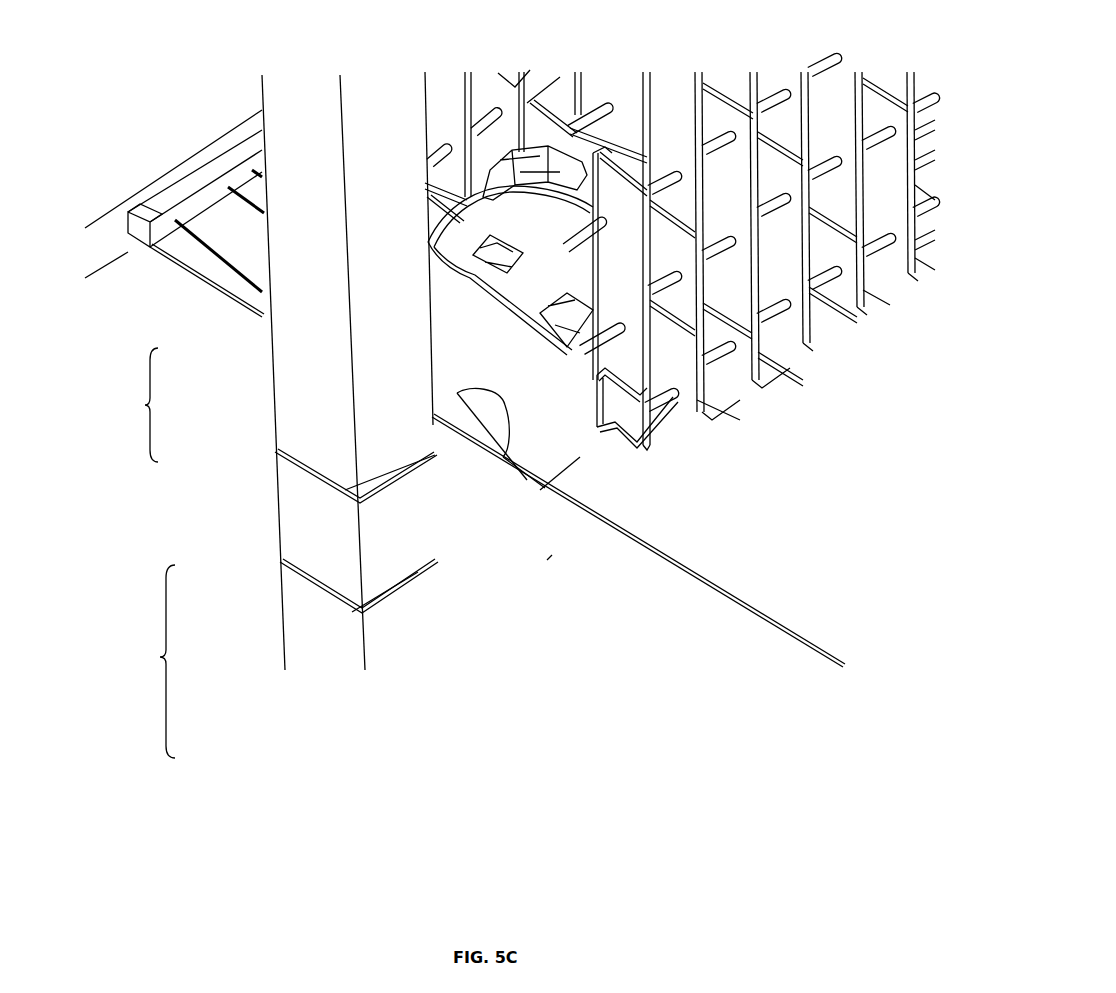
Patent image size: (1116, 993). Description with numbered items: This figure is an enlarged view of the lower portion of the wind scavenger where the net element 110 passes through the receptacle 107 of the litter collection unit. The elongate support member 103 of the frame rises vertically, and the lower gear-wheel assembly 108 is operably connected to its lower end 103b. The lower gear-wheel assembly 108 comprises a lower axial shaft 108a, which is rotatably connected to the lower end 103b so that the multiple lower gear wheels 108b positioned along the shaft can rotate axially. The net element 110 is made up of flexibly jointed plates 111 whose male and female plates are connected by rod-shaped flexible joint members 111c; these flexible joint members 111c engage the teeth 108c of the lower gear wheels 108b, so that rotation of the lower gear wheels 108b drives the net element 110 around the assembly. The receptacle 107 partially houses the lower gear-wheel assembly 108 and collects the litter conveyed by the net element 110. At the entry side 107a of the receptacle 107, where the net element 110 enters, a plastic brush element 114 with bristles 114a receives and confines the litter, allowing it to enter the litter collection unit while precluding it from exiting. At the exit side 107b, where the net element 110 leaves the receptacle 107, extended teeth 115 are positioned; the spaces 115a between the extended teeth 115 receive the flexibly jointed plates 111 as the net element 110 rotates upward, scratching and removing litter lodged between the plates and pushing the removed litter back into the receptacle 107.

The elongate support member 103 is at (293, 132).
The lower end of the elongate support member 103b is at (268, 515).
The receptacle 107 is at (223, 268).
The entry side of the receptacle 107a is at (128, 247).
The exit side of the receptacle 107b is at (628, 467).
The lower gear-wheel assembly 108 is at (130, 405).
The lower axial shaft 108a is at (457, 408).
The lower gear wheels 108b is at (517, 203).
The teeth of the lower gear wheels 108c is at (548, 333).
The net element 110 is at (147, 661).
The flexibly jointed plates 111 is at (680, 340).
The flexible joint members 111c is at (580, 350).
The brush element 114 is at (248, 147).
The bristles 114a is at (232, 220).
The extended teeth 115 is at (733, 393).
The spaces between the extended teeth 115a is at (818, 340).